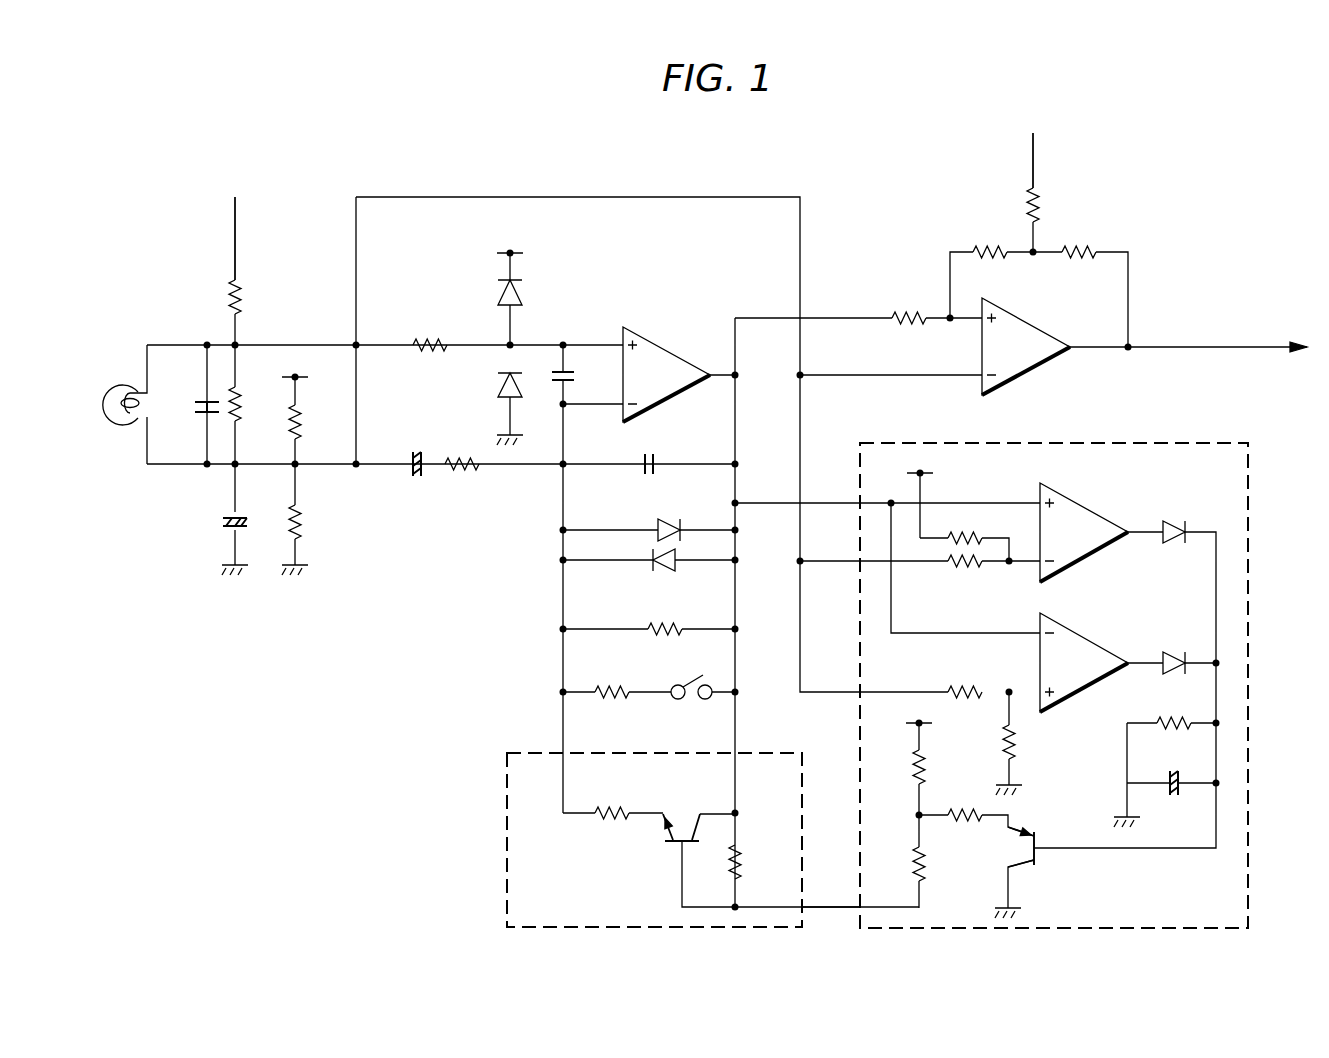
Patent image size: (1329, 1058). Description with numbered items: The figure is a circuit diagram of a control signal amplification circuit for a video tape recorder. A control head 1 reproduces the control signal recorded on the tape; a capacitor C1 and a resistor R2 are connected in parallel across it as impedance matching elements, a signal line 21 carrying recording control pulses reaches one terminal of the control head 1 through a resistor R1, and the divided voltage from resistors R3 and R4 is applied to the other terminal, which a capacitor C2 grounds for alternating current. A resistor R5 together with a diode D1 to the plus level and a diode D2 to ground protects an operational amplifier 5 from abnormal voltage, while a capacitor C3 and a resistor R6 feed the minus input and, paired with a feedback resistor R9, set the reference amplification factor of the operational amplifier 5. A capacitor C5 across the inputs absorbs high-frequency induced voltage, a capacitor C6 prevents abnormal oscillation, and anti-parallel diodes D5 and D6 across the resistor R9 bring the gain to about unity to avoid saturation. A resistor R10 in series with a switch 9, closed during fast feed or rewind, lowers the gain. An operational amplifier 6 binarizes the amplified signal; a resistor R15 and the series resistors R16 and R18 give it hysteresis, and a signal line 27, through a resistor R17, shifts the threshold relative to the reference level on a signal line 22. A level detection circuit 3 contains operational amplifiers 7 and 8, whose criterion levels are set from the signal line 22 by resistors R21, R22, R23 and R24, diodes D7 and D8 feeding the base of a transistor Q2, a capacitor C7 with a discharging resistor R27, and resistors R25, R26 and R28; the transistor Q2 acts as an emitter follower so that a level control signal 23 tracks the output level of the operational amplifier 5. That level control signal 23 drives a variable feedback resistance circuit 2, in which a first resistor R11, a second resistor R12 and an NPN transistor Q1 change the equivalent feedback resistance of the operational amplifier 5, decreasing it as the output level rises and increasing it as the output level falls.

The control head 1 is at (113, 428).
The variable feedback resistance circuit 2 is at (507, 823).
The level detection circuit 3 is at (1248, 770).
The operational amplifier 5 is at (669, 349).
The operational amplifier 6 is at (1021, 381).
The operational amplifier 7 is at (1087, 503).
The operational amplifier 8 is at (1087, 638).
The switch 9 is at (718, 680).
The signal line 21 is at (235, 222).
The signal line 22 is at (356, 222).
The level control signal 23 is at (830, 907).
The signal line 27 is at (1033, 157).
The resistor R1 is at (253, 297).
The resistor R2 is at (250, 420).
The resistor R3 is at (313, 422).
The resistor R4 is at (313, 522).
The resistor R5 is at (430, 329).
The resistor R6 is at (462, 478).
The resistor R9 is at (682, 616).
The resistor R10 is at (615, 678).
The first resistor R11 is at (615, 827).
The second resistor R12 is at (758, 862).
The resistor R15 is at (911, 305).
The resistor R16 is at (991, 239).
The resistor R17 is at (1059, 205).
The resistor R18 is at (1081, 267).
The resistor R21 is at (967, 524).
The resistor R22 is at (967, 576).
The resistor R23 is at (967, 679).
The resistor R24 is at (1033, 742).
The resistor R25 is at (943, 767).
The resistor R26 is at (967, 829).
The resistor R27 is at (1177, 737).
The resistor R28 is at (943, 864).
The capacitor C1 is at (196, 392).
The capacitor C2 is at (221, 522).
The capacitor C3 is at (419, 451).
The capacitor C5 is at (582, 384).
The capacitor C6 is at (652, 450).
The capacitor C7 is at (1172, 795).
The diode D1 is at (528, 293).
The diode D2 is at (495, 385).
The diode D5 is at (653, 522).
The diode D6 is at (649, 571).
The diode D7 is at (1173, 517).
The diode D8 is at (1173, 648).
The NPN transistor Q1 is at (681, 813).
The transistor Q2 is at (1033, 861).